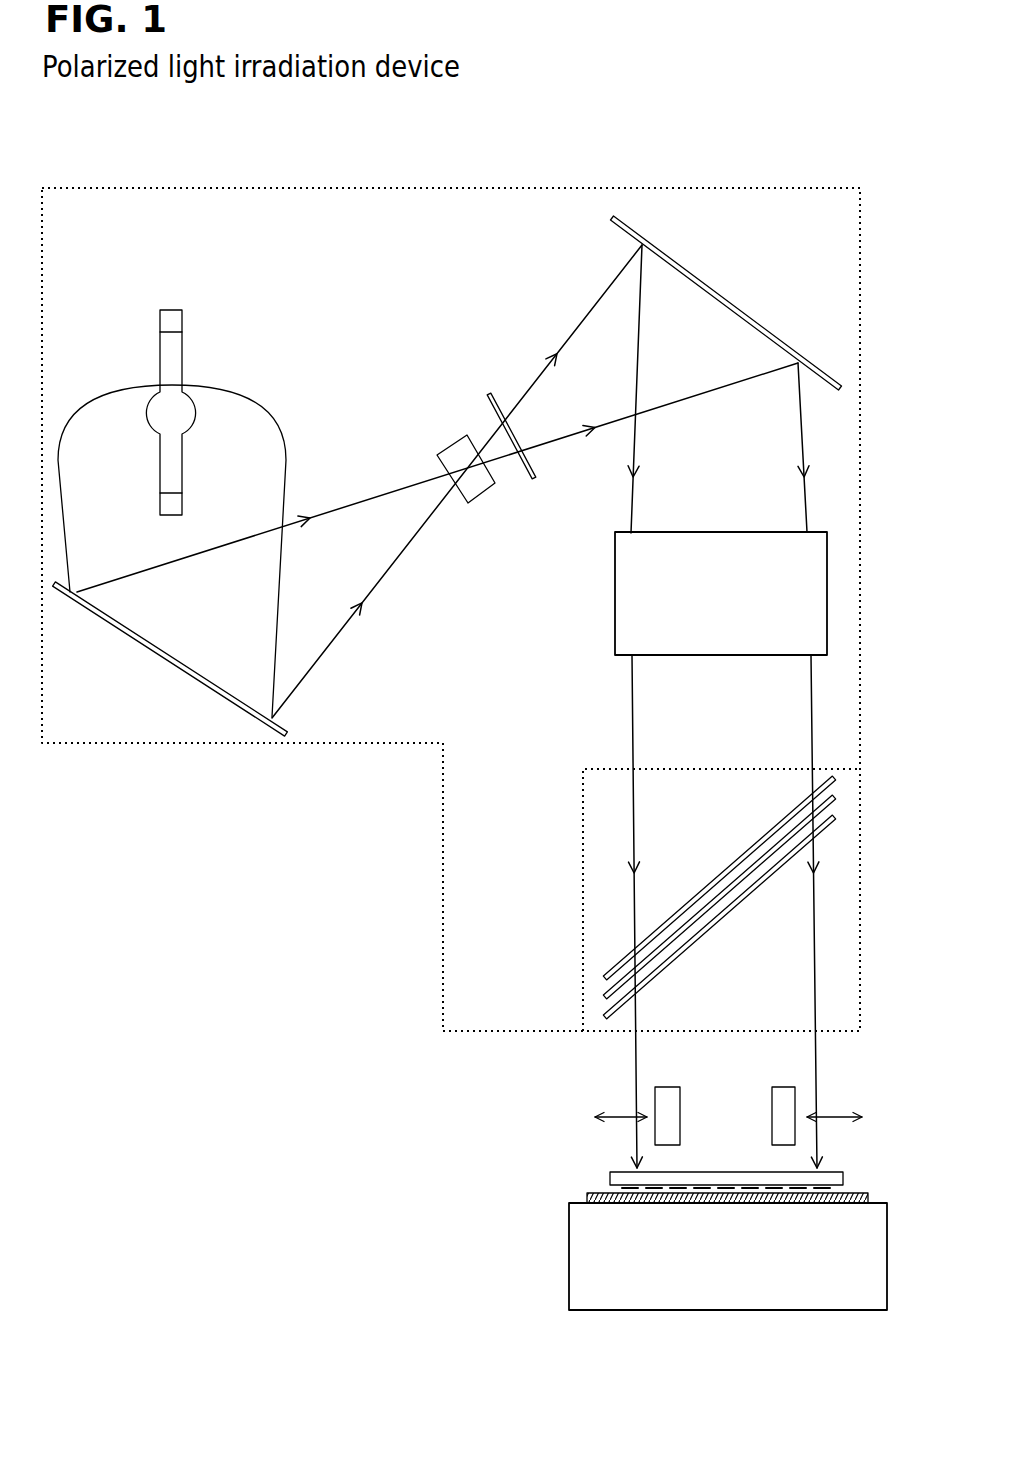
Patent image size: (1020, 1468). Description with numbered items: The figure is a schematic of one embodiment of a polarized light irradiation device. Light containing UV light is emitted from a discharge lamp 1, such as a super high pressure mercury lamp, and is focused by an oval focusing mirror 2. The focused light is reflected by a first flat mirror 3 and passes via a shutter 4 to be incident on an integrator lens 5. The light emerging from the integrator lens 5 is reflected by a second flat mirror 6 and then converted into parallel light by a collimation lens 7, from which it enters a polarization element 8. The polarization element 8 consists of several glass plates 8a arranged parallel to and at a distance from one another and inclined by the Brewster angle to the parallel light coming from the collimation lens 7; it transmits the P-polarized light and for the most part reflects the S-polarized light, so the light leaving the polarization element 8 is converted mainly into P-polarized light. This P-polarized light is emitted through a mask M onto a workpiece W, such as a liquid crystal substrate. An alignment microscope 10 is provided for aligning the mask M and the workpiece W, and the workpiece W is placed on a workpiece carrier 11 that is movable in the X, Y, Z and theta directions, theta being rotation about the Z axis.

The discharge lamp 1 is at (193, 415).
The oval focusing mirror 2 is at (88, 405).
The first flat mirror 3 is at (170, 659).
The shutter 4 is at (533, 478).
The integrator lens 5 is at (458, 435).
The second flat mirror 6 is at (747, 313).
The collimation lens 7 is at (617, 612).
The polarization element 8 is at (583, 837).
The glass plates 8a is at (622, 958).
The alignment microscope 10 is at (647, 1098).
The mask M is at (610, 1172).
The workpiece W is at (587, 1195).
The workpiece carrier 11 is at (569, 1253).